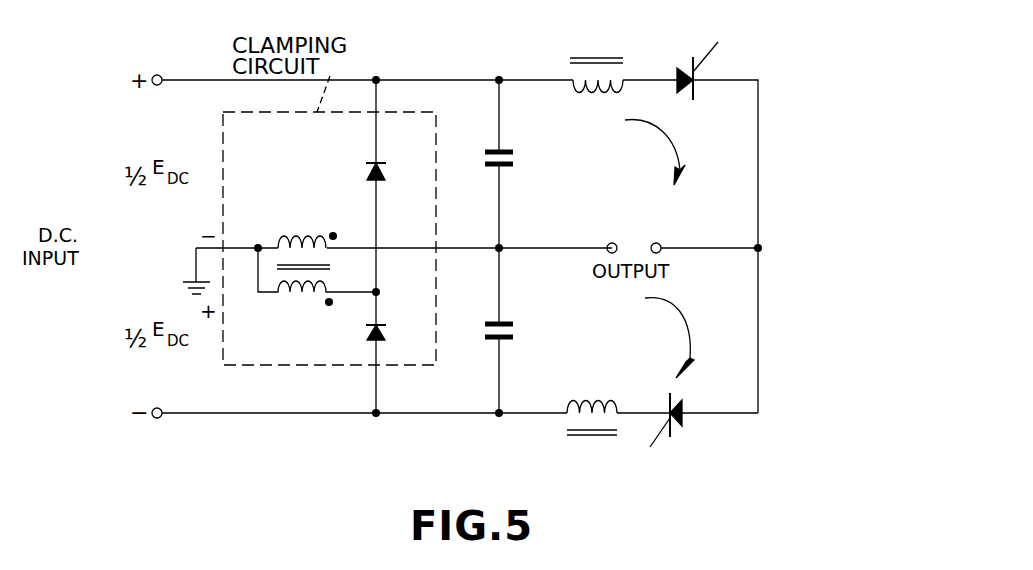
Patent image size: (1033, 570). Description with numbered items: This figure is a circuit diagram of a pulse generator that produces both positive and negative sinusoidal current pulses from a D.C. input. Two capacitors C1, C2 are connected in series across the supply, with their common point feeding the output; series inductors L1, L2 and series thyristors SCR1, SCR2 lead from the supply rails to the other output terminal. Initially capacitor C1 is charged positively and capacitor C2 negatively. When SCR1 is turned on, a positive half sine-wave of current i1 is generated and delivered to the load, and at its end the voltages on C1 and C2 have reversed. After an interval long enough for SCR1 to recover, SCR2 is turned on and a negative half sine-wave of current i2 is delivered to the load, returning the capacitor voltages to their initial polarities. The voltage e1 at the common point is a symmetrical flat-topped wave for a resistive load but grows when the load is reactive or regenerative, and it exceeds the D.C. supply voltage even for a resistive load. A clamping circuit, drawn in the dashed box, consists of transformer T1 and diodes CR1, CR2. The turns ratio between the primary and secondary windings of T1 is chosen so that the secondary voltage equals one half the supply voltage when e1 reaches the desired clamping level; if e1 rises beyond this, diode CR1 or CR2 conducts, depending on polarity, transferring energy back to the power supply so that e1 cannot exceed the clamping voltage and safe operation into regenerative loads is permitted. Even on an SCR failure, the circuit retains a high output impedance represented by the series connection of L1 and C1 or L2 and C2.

The diode CR1 is at (365, 172).
The diode CR2 is at (365, 332).
The transformer T1 is at (319, 236).
The capacitor C1 is at (513, 166).
The capacitor C2 is at (513, 339).
The series inductor L1 is at (600, 58).
The series inductor L2 is at (578, 439).
The series thyristor SCR1 is at (689, 66).
The series thyristor SCR2 is at (672, 427).
The common point voltage e1 is at (496, 252).
The positive half sine-wave current i1 is at (674, 152).
The negative half sine-wave current i2 is at (685, 323).